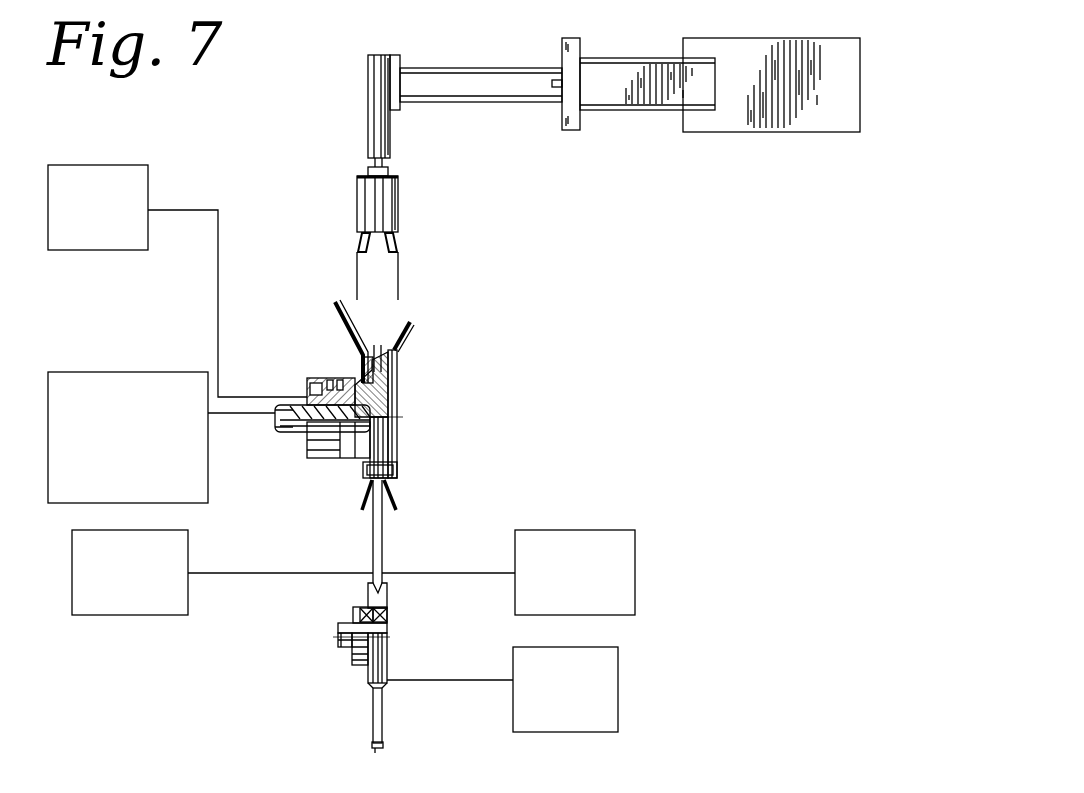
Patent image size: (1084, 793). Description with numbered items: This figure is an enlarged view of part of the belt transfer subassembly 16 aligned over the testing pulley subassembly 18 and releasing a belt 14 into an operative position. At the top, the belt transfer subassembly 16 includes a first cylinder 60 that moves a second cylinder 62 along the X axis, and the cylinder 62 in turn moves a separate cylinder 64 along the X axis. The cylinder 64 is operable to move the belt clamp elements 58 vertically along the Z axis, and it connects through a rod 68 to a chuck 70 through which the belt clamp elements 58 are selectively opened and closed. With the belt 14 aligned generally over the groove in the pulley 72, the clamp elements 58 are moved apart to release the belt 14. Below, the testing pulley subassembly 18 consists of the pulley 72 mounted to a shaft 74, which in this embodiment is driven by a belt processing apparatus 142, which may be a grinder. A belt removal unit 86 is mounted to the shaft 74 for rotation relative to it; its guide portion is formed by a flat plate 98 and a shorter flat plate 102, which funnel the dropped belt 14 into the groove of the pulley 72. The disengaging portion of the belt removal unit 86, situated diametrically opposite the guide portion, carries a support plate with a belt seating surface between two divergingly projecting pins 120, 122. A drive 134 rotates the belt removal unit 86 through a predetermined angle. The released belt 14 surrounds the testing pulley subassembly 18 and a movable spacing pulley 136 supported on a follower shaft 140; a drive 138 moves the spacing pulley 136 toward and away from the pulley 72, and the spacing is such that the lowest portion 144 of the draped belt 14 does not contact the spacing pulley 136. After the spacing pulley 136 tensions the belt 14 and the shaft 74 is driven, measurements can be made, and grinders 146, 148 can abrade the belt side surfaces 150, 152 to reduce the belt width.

The belt transfer subassembly 16 is at (812, 32).
The first cylinder 60 is at (832, 122).
The second cylinder 62 is at (612, 95).
The cylinder 64 is at (368, 120).
The rod 68 is at (390, 166).
The chuck 70 is at (388, 201).
The belt clamp elements 58 is at (357, 272).
The flat plate 98 is at (335, 312).
The flat plate 102 is at (412, 325).
The testing pulley subassembly 18 is at (299, 383).
The belt removal unit 86 is at (402, 391).
The pulley 72 is at (398, 412).
The shaft 74 is at (293, 415).
The pin 120 is at (367, 493).
The pin 122 is at (400, 502).
The belt 14 is at (382, 555).
The spacing pulley 136 is at (378, 598).
The shaft 140 is at (340, 643).
The belt side surface 150 is at (373, 730).
The belt side surface 152 is at (382, 732).
The lowest portion 144 is at (375, 750).
The drive 134 is at (82, 240).
The belt processing apparatus 142 is at (110, 492).
The grinder 146 is at (114, 604).
The grinder 148 is at (559, 605).
The drive 138 is at (549, 721).